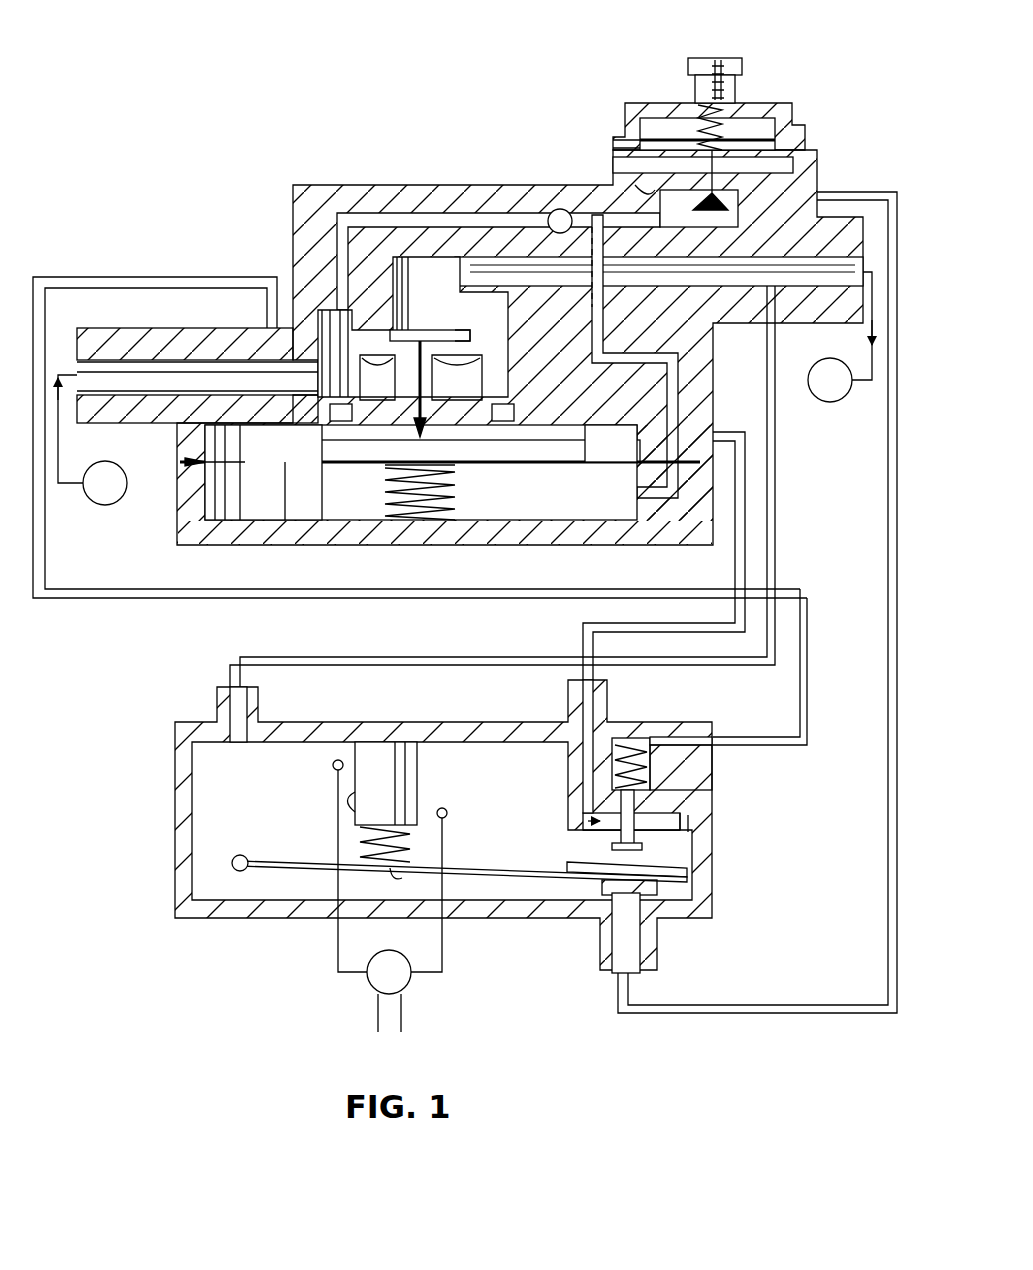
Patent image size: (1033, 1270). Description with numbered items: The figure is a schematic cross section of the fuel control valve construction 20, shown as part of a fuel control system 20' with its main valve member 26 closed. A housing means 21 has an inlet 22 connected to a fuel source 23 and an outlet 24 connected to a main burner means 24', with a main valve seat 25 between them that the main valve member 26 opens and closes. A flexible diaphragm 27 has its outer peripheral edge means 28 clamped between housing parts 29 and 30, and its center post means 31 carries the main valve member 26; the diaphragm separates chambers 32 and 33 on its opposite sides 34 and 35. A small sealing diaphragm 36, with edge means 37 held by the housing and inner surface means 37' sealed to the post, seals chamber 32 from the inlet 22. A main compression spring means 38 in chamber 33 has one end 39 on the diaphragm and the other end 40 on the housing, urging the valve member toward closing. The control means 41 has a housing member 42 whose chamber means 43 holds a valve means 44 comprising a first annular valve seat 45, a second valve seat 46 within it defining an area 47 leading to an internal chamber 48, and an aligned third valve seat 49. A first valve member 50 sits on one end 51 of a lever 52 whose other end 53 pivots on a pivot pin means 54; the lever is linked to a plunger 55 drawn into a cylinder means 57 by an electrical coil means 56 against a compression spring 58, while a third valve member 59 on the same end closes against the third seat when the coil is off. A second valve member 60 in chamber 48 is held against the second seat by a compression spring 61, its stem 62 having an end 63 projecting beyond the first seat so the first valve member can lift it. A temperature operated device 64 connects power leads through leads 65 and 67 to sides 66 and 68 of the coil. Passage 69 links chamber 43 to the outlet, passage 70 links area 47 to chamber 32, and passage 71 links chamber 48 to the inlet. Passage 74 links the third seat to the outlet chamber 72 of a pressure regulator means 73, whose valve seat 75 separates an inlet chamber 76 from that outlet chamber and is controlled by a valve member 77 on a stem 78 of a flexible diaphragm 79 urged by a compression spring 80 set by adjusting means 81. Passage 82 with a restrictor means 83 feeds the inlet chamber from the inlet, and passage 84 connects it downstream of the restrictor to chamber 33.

The fuel control valve construction 20 is at (527, 81).
The fuel control system 20' is at (415, 136).
The housing means 21 is at (318, 184).
The inlet 22 is at (118, 330).
The fuel source 23 is at (99, 505).
The outlet 24 is at (663, 318).
The main burner means 24' is at (830, 406).
The main valve seat 25 is at (478, 312).
The main valve member 26 is at (478, 340).
The flexible diaphragm 27 is at (240, 463).
The outer peripheral edge means 28 is at (200, 463).
The housing part 29 is at (158, 415).
The housing part 30 is at (188, 535).
The center post means 31 is at (472, 375).
The chamber 32 is at (603, 430).
The chamber 33 is at (615, 522).
The side 34 is at (537, 445).
The side 35 is at (548, 480).
The sealing diaphragm 36 is at (365, 327).
The outer peripheral edge means 37 is at (399, 405).
The inner peripheral surface means 37' is at (430, 361).
The main compression spring means 38 is at (280, 472).
The end 39 is at (455, 478).
The end 40 is at (410, 522).
The control means 41 is at (196, 940).
The housing member 42 is at (178, 885).
The chamber means 43 is at (205, 812).
The valve means 44 is at (555, 845).
The first annular valve seat 45 is at (690, 826).
The second valve seat 46 is at (652, 820).
The area 47 is at (585, 822).
The internal chamber 48 is at (650, 748).
The third valve seat 49 is at (660, 888).
The first movable valve member 50 is at (688, 868).
The end 51 is at (583, 900).
The lever 52 is at (512, 915).
The other end 53 is at (288, 862).
The pivot pin means 54 is at (232, 863).
The plunger 55 is at (398, 878).
The electrical coil means 56 is at (380, 800).
The housing or cylinder means 57 is at (410, 755).
The compression spring 58 is at (365, 845).
The third valve member 59 is at (613, 940).
The second movable valve member 60 is at (690, 770).
The compression spring 61 is at (625, 748).
The stem 62 is at (642, 800).
The end 63 is at (642, 847).
The temperature operated device 64 is at (368, 985).
The lead 65 is at (338, 942).
The side 66 is at (333, 765).
The lead 67 is at (445, 965).
The other side 68 is at (448, 813).
The passage defining means 69 is at (440, 658).
The passage defining means 70 is at (680, 628).
The passage defining means 71 is at (810, 672).
The outlet chamber 72 is at (800, 172).
The pressure regulator means 73 is at (802, 108).
The passage defining means 74 is at (888, 770).
The valve seat 75 is at (625, 172).
The inlet chamber 76 is at (738, 215).
The valve member 77 is at (692, 202).
The stem 78 is at (626, 148).
The flexible diaphragm 79 is at (772, 140).
The compression spring 80 is at (700, 108).
The adjusting means 81 is at (740, 70).
The passage defining means 82 is at (498, 212).
The restrictor means 83 is at (557, 208).
The passage defining means 84 is at (680, 360).